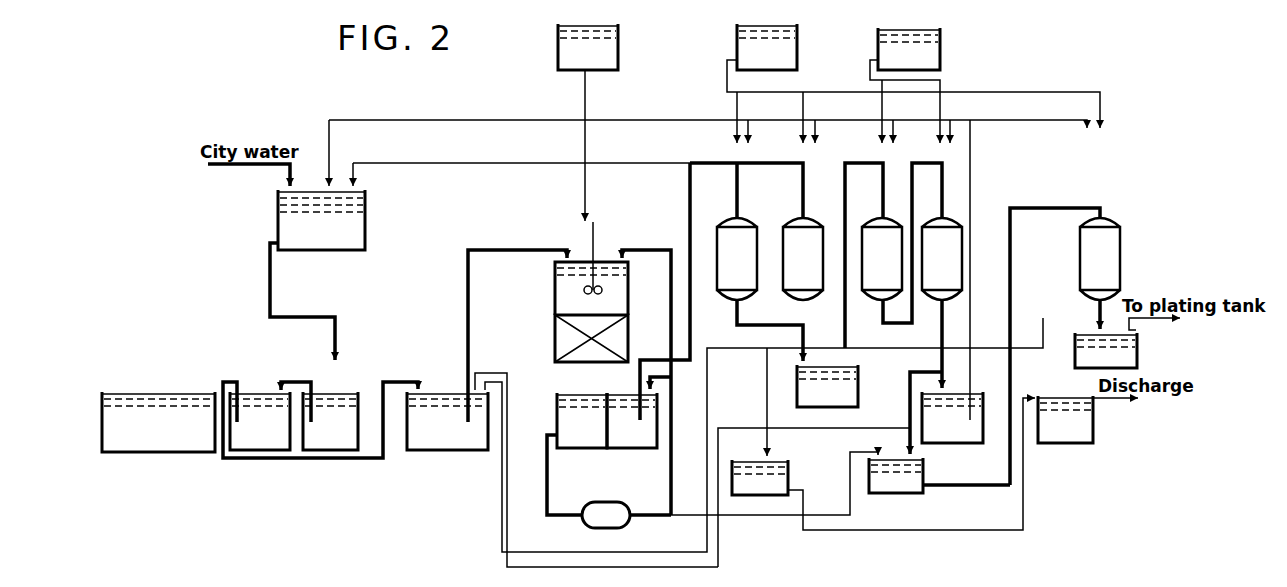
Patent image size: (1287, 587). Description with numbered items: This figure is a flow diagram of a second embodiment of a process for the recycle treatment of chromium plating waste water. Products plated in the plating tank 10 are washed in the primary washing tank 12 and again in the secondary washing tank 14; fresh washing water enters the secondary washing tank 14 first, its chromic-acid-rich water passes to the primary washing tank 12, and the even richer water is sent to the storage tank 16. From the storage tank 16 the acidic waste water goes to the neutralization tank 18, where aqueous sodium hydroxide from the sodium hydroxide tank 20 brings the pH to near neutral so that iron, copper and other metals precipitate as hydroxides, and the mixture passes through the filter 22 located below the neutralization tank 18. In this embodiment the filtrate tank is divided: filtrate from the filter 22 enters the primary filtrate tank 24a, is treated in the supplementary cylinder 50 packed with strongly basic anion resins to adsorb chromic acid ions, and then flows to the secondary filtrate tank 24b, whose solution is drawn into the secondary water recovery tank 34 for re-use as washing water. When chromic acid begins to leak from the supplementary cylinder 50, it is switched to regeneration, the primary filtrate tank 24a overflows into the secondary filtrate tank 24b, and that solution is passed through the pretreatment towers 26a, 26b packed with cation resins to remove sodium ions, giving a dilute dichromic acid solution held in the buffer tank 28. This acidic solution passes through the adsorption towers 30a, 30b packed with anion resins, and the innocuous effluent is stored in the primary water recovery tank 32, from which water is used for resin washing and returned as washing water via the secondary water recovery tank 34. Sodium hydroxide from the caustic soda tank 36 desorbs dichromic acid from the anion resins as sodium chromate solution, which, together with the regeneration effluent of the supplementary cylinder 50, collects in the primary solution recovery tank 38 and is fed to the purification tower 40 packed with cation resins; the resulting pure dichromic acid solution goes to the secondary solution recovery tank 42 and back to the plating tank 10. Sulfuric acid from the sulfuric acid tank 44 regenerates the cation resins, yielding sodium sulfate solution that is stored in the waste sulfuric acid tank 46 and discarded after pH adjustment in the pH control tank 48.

The plating tank 10 is at (167, 397).
The primary washing tank 12 is at (258, 398).
The secondary washing tank 14 is at (330, 438).
The storage tank 16 is at (445, 395).
The neutralization tank 18 is at (562, 290).
The sodium hydroxide tank 20 is at (618, 48).
The filter 22 is at (565, 338).
The primary filtrate tank 24a is at (578, 440).
The secondary filtrate tank 24b is at (628, 438).
The pretreatment tower 26a is at (730, 222).
The pretreatment tower 26b is at (798, 222).
The buffer tank 28 is at (858, 395).
The adsorption tower 30a is at (877, 300).
The adsorption tower 30b is at (948, 222).
The primary water recovery tank 32 is at (958, 430).
The secondary water recovery tank 34 is at (355, 220).
The caustic soda tank 36 is at (940, 48).
The primary solution recovery tank 38 is at (898, 482).
The purification tower 40 is at (1112, 252).
The secondary solution recovery tank 42 is at (1137, 350).
The sulfuric acid tank 44 is at (797, 48).
The waste sulfuric acid tank 46 is at (788, 468).
The pH control tank 48 is at (1067, 443).
The supplementary cylinder 50 is at (617, 517).